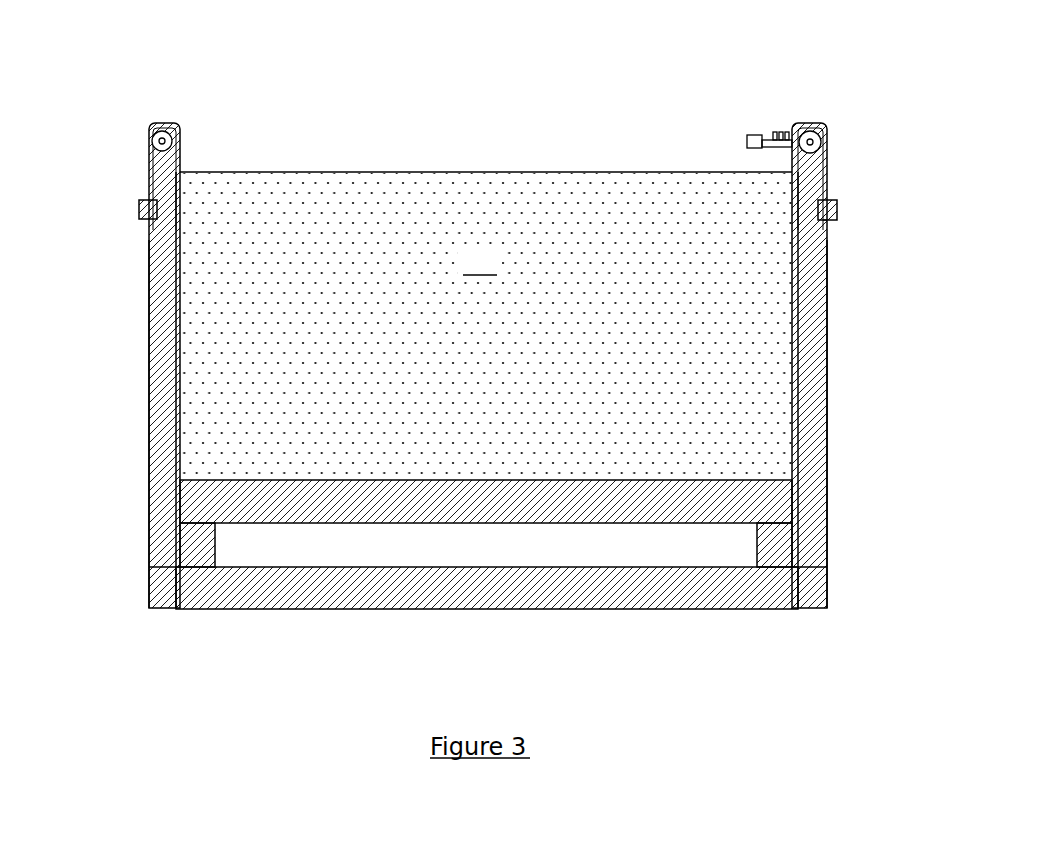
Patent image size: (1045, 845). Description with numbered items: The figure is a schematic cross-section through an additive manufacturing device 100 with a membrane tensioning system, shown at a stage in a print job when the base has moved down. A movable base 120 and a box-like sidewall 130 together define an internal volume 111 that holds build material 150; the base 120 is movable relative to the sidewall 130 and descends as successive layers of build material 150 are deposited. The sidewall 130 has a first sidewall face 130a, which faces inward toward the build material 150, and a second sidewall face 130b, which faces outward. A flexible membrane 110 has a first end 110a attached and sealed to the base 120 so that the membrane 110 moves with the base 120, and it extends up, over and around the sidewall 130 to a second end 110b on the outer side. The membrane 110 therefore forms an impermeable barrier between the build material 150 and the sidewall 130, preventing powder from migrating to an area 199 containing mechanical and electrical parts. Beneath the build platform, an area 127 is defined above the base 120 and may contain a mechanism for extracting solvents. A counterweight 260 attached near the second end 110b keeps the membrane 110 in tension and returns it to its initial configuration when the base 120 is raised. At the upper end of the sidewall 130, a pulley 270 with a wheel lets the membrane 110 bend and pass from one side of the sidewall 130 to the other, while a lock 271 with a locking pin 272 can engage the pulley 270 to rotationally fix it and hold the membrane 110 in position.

The device 100 is at (575, 101).
The membrane 110 is at (829, 132).
The first end of the membrane 110a is at (178, 565).
The second end of the membrane 110b is at (150, 170).
The internal volume 111 is at (497, 137).
The base 120 is at (457, 592).
The area 127 is at (316, 554).
The sidewall 130 is at (162, 285).
The first sidewall face 130a is at (150, 226).
The second sidewall face 130b is at (150, 333).
The build material 150 is at (497, 275).
The area containing mechanical and/or electrical parts 199 is at (355, 714).
The counterweight 260 is at (828, 221).
The pulley 270 is at (799, 112).
The lock 271 is at (757, 136).
The locking pin 272 is at (776, 132).